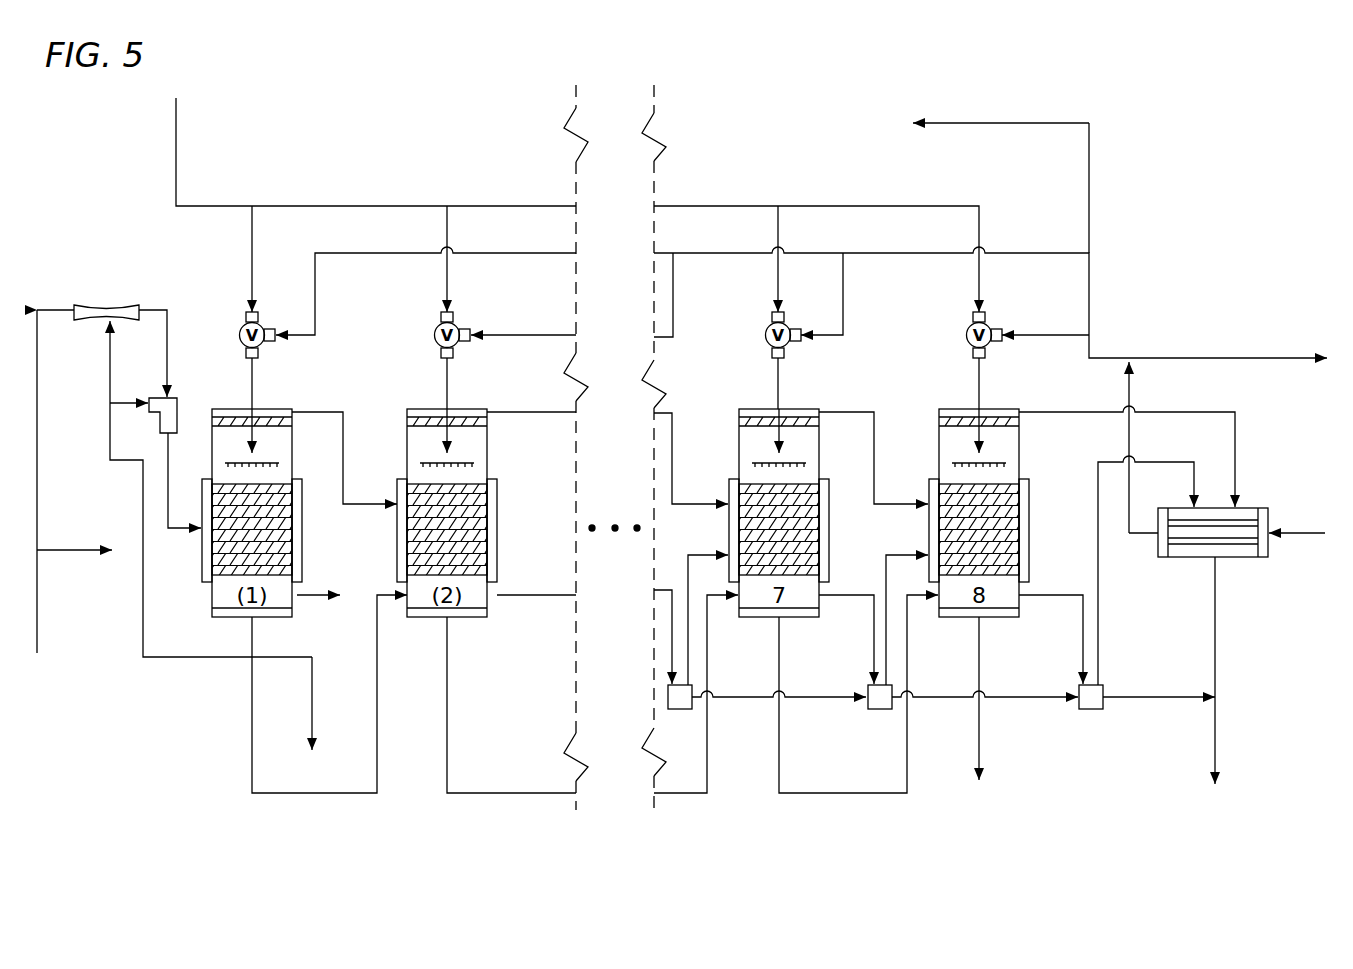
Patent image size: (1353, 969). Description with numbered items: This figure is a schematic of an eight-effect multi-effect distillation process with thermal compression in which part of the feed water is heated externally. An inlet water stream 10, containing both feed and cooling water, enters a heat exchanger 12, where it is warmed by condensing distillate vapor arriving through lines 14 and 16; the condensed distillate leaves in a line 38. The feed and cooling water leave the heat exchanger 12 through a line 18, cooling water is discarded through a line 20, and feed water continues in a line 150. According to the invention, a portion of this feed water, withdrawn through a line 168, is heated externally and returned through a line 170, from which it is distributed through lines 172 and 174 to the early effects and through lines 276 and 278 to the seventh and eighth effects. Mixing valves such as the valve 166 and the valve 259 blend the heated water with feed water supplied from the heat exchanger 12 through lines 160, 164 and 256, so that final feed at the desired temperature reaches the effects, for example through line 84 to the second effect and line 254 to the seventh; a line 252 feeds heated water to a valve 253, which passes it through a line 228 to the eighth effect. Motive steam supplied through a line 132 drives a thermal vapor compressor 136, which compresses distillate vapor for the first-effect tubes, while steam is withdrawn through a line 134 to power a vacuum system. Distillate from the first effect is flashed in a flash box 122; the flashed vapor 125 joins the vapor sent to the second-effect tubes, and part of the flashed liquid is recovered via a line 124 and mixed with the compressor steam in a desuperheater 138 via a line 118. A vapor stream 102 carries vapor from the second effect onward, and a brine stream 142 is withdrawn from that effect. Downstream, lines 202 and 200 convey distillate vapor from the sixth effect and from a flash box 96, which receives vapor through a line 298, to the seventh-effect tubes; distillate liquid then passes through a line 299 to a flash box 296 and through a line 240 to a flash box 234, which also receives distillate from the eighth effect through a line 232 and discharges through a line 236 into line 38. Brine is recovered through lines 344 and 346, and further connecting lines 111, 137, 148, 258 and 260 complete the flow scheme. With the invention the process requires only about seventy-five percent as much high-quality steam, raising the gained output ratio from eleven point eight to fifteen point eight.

The inlet water stream 10 is at (1287, 530).
The heat exchanger 12 is at (1232, 558).
The line 14 is at (1237, 460).
The line 16 is at (1096, 485).
The line 18 is at (1131, 393).
The line 20 is at (1280, 357).
The line 38 is at (1216, 610).
The line 84 is at (447, 383).
The flash box 96 is at (666, 698).
The vapor stream 102 is at (550, 410).
The line 111 is at (255, 383).
The line 118 is at (173, 530).
The flash box 122 is at (314, 678).
The line 124 is at (112, 428).
The flashed vapor stream 125 is at (310, 592).
The line 132 is at (57, 548).
The line 134 is at (38, 610).
The thermal vapor compressor 136 is at (115, 305).
The line 137 is at (163, 327).
The desuperheater 138 is at (177, 402).
The brine stream 142 is at (480, 793).
The line 148 is at (377, 760).
The line 150 is at (1007, 258).
The line 160 is at (545, 333).
The line 164 is at (337, 253).
The mixing valve 166 is at (240, 325).
The line 168 is at (435, 335).
The line 170 is at (176, 118).
The line 172 is at (252, 226).
The line 174 is at (448, 237).
The line 200 is at (686, 570).
The line 202 is at (672, 452).
The line 228 is at (978, 384).
The line 232 is at (1080, 640).
The flash box 234 is at (1091, 710).
The line 236 is at (1128, 690).
The line 240 is at (1042, 690).
The line 252 is at (1047, 338).
The valve 253 is at (967, 338).
The line 254 is at (778, 392).
The line 256 is at (845, 325).
The line 258 is at (874, 466).
The mixing valve 259 is at (767, 337).
The line 260 is at (662, 340).
The line 276 is at (779, 236).
The line 278 is at (979, 230).
The flash box 296 is at (884, 712).
The line 298 is at (668, 634).
The line 299 is at (832, 696).
The brine recovery line 344 is at (908, 765).
The brine recovery line 346 is at (981, 722).